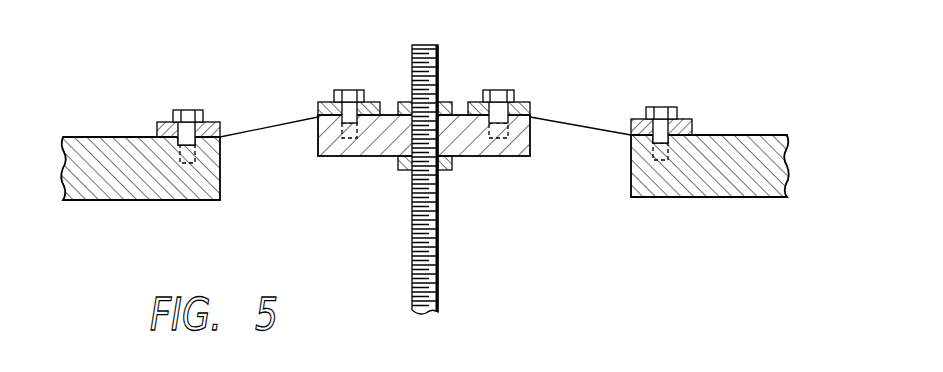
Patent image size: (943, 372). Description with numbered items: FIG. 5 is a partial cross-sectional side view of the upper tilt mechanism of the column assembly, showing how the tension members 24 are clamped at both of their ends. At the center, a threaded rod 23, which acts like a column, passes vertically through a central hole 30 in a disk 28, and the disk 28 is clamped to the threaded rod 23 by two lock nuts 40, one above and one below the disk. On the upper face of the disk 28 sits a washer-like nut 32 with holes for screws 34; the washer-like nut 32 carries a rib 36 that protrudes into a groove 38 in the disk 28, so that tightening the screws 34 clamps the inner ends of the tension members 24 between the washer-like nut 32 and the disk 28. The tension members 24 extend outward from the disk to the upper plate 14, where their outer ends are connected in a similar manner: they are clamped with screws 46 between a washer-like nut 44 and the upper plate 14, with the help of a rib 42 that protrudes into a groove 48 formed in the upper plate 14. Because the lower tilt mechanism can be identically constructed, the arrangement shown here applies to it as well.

The upper plate 14 is at (82, 137).
The threaded rod 23 is at (442, 250).
The tension members 24 is at (257, 131).
The disk 28 is at (426, 131).
The central hole 30 is at (393, 143).
The washer-like nut 32 is at (322, 102).
The screws 34 is at (352, 89).
The rib 36 is at (342, 124).
The groove 38 is at (356, 122).
The lock nuts 40 is at (448, 102).
The rib 42 is at (178, 145).
The washer-like nut 44 is at (165, 121).
The screws 46 is at (190, 108).
The groove 48 is at (197, 143).